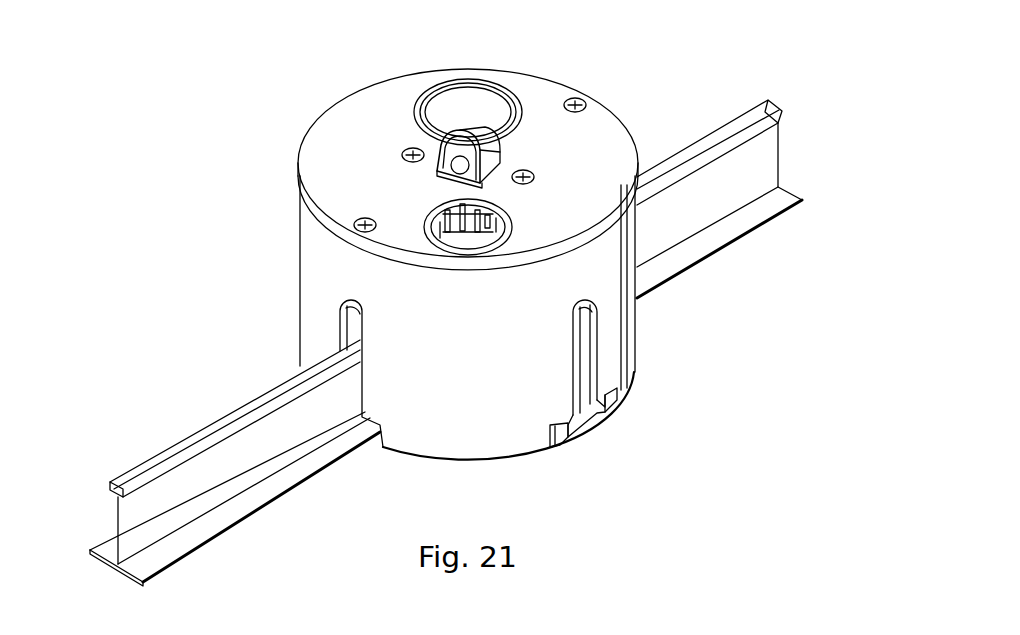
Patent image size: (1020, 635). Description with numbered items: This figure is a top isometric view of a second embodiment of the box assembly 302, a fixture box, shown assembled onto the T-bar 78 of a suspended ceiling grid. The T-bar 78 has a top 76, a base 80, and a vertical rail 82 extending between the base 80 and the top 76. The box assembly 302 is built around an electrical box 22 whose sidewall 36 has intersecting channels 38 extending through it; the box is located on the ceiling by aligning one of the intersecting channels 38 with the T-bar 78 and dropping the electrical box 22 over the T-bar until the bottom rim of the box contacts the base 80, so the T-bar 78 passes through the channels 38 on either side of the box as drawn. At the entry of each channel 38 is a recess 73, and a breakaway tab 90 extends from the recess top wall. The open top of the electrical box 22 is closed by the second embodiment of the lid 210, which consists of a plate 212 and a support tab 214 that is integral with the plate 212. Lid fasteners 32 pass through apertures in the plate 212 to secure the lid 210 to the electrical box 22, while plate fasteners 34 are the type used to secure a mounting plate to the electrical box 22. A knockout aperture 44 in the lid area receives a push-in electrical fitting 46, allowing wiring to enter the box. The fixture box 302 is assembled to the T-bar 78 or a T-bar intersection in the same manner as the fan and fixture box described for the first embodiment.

The box assembly 302 is at (163, 165).
The lid 210 is at (330, 148).
The plate 212 is at (577, 248).
The support tab 214 is at (470, 140).
The knockout aperture 44 is at (442, 92).
The lid fastener 32 is at (616, 87).
The plate fastener 34 is at (566, 159).
The push-in electrical fitting 46 is at (511, 223).
The electrical box 22 is at (310, 277).
The sidewall 36 is at (489, 354).
The intersecting channel 38 is at (583, 347).
The recess 73 is at (583, 407).
The breakaway tab 90 is at (562, 432).
The T-bar 78 is at (752, 199).
The top 76 is at (180, 450).
The vertical rail 82 is at (194, 515).
The base 80 is at (187, 543).